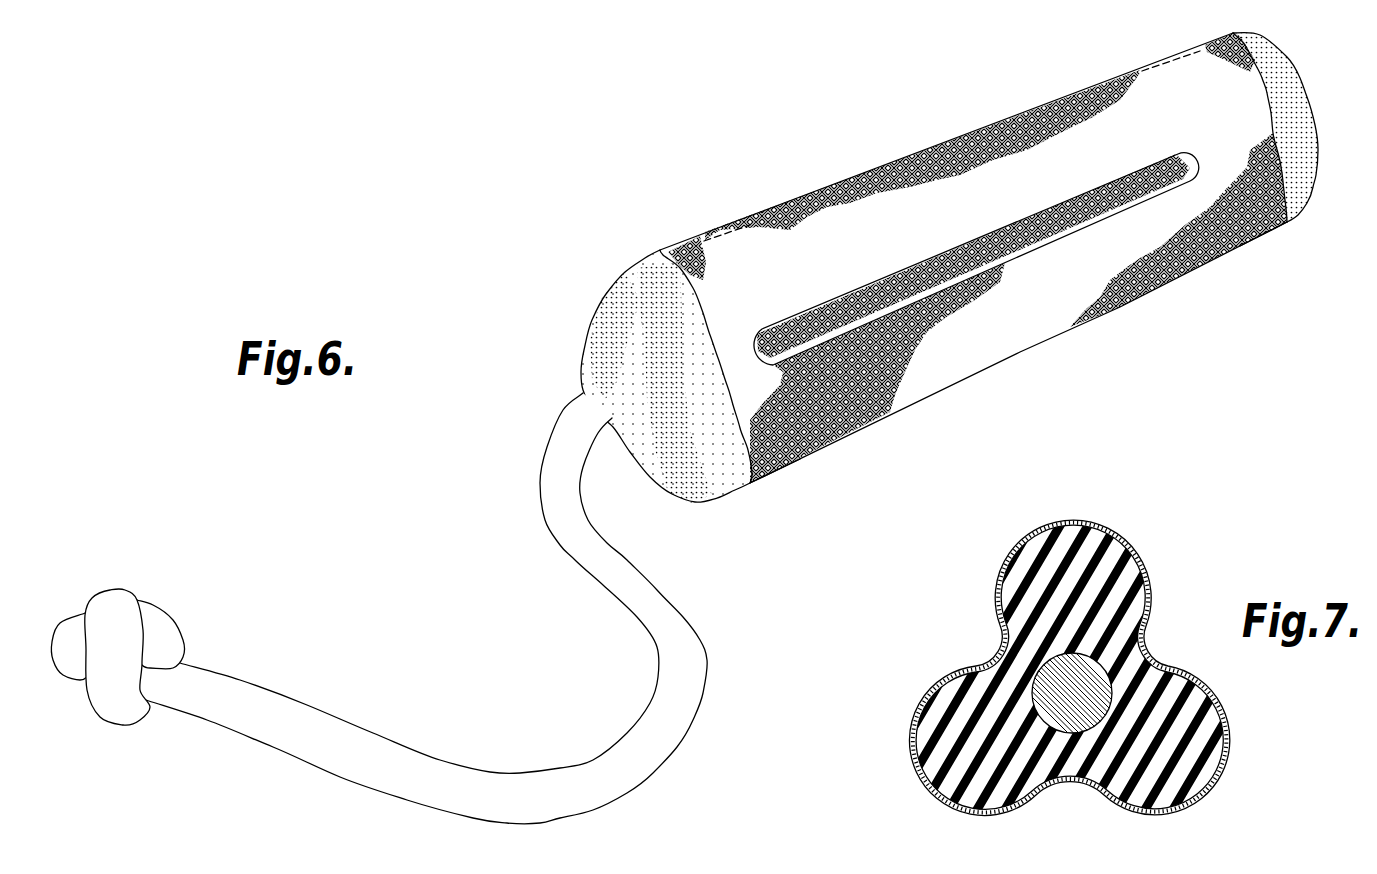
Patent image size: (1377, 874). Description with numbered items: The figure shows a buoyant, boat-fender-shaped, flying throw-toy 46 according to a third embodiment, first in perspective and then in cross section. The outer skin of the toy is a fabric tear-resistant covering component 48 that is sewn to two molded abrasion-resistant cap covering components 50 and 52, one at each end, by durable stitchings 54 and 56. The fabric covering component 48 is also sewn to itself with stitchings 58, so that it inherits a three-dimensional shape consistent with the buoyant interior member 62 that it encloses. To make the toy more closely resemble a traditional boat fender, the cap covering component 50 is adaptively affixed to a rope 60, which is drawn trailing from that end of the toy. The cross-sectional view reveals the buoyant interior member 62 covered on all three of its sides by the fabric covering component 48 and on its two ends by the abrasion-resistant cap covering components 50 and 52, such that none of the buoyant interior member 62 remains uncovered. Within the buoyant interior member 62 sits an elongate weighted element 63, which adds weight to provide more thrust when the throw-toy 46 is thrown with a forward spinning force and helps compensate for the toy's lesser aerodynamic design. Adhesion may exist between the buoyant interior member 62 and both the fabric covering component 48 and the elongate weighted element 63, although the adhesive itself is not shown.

In FIG. 6, the buoyant, boat-fender-shaped, flying throw-toy 46 is at (974, 299).
In FIG. 6, the fabric tear-resistant covering component 48 is at (1047, 325).
In FIG. 7, the fabric tear-resistant covering component 48 is at (993, 603).
In FIG. 6, the cap covering component 50 is at (713, 498).
In FIG. 6, the cap covering component 52 is at (1308, 203).
In FIG. 6, the stitching 54 is at (760, 478).
In FIG. 6, the stitching 56 is at (1287, 223).
In FIG. 6, the stitching 58 is at (705, 232).
In FIG. 7, the stitching 58 is at (1070, 517).
In FIG. 6, the rope 60 is at (607, 588).
In FIG. 7, the buoyant interior member 62 is at (1192, 683).
In FIG. 7, the elongate weighted element 63 is at (1033, 700).